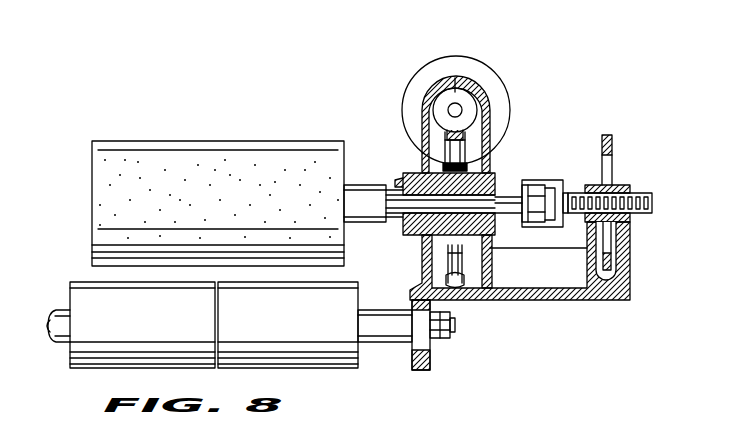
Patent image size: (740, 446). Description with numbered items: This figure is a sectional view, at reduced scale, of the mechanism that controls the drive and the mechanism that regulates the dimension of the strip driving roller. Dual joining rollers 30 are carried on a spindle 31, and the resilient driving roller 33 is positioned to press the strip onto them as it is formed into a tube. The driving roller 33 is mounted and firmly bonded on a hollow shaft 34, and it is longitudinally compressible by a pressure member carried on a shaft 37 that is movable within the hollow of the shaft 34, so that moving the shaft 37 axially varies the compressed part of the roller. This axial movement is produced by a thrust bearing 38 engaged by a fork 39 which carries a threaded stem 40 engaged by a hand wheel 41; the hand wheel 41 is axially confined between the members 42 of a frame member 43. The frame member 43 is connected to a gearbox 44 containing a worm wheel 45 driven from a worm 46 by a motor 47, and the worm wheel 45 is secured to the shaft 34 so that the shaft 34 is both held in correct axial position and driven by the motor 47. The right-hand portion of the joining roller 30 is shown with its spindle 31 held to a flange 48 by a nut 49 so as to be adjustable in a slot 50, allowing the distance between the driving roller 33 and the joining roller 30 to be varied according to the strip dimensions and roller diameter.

The dual joining rollers 30 is at (164, 324).
The spindle 31 is at (56, 344).
The driving roller 33 is at (280, 150).
The hollow shaft 34 is at (367, 212).
The shaft 37 is at (507, 215).
The thrust bearing 38 is at (533, 186).
The fork 39 is at (550, 186).
The threaded stem 40 is at (641, 193).
The hand wheel 41 is at (606, 135).
The members 42 is at (596, 248).
The frame member 43 is at (545, 300).
The gearbox 44 is at (486, 93).
The worm wheel 45 is at (448, 165).
The worm 46 is at (447, 104).
The motor 47 is at (472, 68).
The flange 48 is at (429, 368).
The nut 49 is at (450, 318).
The slot 50 is at (428, 346).